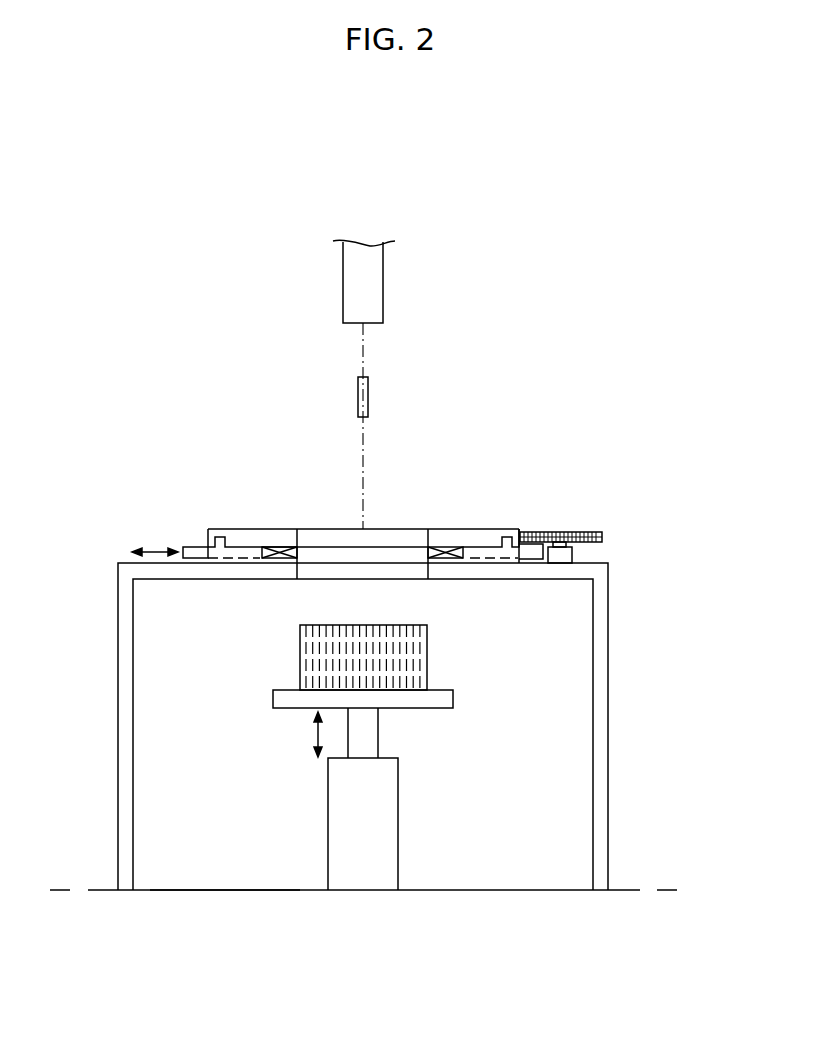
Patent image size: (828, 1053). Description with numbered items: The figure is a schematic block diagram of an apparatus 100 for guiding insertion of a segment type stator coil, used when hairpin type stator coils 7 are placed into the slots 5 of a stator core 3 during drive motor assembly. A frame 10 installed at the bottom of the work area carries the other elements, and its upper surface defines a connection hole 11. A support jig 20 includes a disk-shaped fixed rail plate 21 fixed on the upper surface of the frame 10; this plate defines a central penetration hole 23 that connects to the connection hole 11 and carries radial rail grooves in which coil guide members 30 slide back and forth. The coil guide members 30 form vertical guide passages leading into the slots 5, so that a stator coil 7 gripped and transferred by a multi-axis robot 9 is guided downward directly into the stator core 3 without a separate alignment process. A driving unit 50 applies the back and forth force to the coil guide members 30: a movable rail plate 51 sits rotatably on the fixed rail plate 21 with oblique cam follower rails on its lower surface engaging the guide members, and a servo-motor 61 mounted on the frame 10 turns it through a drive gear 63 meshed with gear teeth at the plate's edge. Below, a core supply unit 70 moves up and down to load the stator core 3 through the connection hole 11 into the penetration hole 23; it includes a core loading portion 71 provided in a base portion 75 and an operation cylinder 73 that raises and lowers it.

The apparatus for guiding insertion of a segment type stator coil 100 is at (373, 179).
The frame 10 is at (620, 595).
The connection hole 11 is at (298, 576).
The multi-axis robot 9 is at (385, 272).
The stator coil 7 is at (369, 390).
The support jig 20 is at (240, 545).
The fixed rail plate 21 is at (218, 558).
The penetration hole 23 is at (297, 550).
The coil guide members 30 is at (490, 538).
The driving unit 50 is at (525, 514).
The movable rail plate 51 is at (453, 522).
The servo-motor 61 is at (589, 550).
The drive gear 63 is at (580, 532).
The stator core 3 is at (300, 660).
The slot 5 is at (300, 634).
The core supply unit 70 is at (432, 733).
The core loading portion 71 is at (453, 698).
The operation cylinder 73 is at (387, 827).
The base portion 75 is at (210, 890).